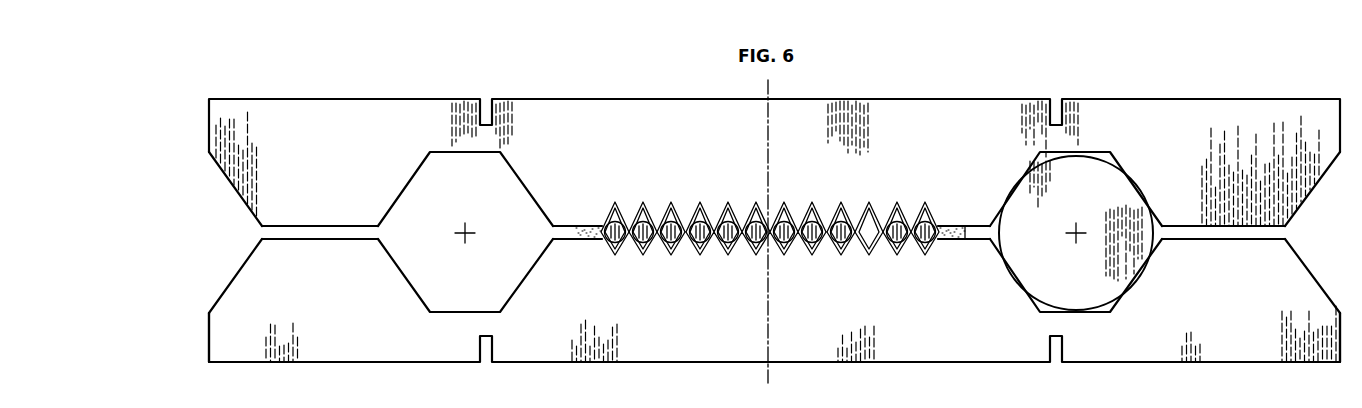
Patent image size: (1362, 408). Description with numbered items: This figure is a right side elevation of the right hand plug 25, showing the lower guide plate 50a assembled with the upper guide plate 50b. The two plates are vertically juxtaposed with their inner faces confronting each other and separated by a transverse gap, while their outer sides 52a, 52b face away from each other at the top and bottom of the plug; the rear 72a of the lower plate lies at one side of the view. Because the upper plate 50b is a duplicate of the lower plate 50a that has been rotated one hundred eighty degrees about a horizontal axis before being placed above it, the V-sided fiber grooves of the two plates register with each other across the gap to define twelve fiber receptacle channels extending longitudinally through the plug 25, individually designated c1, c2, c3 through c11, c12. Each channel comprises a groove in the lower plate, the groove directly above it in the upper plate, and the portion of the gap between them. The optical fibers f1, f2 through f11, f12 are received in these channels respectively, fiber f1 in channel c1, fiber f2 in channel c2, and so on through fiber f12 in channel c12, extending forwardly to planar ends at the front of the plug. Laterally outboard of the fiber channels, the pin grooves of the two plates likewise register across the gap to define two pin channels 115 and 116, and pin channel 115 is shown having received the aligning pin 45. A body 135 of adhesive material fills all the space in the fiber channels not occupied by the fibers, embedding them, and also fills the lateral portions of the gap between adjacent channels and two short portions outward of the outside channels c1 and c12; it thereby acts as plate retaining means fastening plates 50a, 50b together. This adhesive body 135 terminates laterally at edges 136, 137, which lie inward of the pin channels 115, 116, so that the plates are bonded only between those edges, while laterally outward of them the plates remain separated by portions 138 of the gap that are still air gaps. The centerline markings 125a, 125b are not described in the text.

The plug 25 is at (204, 345).
The aligning pin 45 is at (1090, 290).
The lower guide plate 50a is at (750, 337).
The upper guide plate 50b is at (751, 142).
The outer side 52a is at (911, 365).
The outer side 52b is at (911, 99).
The rear 72a is at (1300, 287).
The pin channel 115 is at (1098, 158).
The pin channel 116 is at (440, 188).
The center line lower portion 125a is at (767, 378).
The center line upper portion 125b is at (770, 84).
The body of adhesive material 135 is at (952, 225).
The edge 136 is at (980, 226).
The edge 137 is at (575, 225).
The portions of the gap 138 is at (290, 232).
The fiber receptacle channel c1 is at (925, 205).
The fiber receptacle channel c2 is at (896, 205).
The fiber receptacle channel c3 is at (868, 205).
The fiber receptacle channel c11 is at (644, 203).
The fiber receptacle channel c12 is at (614, 203).
The optical fiber f1 is at (926, 248).
The optical fiber f2 is at (900, 246).
The optical fiber f11 is at (618, 250).
The optical fiber f12 is at (646, 250).